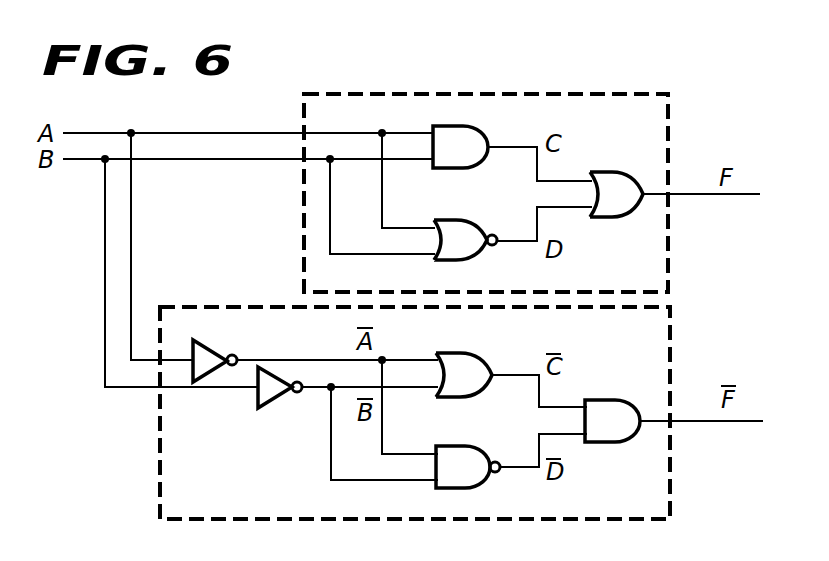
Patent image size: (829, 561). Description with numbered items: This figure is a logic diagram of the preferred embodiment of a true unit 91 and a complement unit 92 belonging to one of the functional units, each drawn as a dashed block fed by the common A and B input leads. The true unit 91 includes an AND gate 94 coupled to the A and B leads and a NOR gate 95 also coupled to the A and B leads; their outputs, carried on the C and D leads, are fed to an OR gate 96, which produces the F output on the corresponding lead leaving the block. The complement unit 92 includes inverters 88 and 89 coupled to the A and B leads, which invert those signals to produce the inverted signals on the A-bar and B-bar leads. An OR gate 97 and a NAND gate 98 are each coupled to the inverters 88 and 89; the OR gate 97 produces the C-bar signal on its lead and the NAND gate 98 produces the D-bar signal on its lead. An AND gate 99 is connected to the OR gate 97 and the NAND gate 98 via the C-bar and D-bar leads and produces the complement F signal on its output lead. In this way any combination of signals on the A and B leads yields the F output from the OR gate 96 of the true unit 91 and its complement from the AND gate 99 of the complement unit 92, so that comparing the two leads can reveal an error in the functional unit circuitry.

The inverter 88 is at (213, 355).
The inverter 89 is at (272, 400).
The true unit 91 is at (440, 92).
The complement unit 92 is at (160, 444).
The AND gate 94 is at (478, 128).
The NOR gate 95 is at (470, 222).
The OR gate 96 is at (636, 214).
The OR gate 97 is at (472, 354).
The NAND gate 98 is at (471, 447).
The AND gate 99 is at (627, 400).